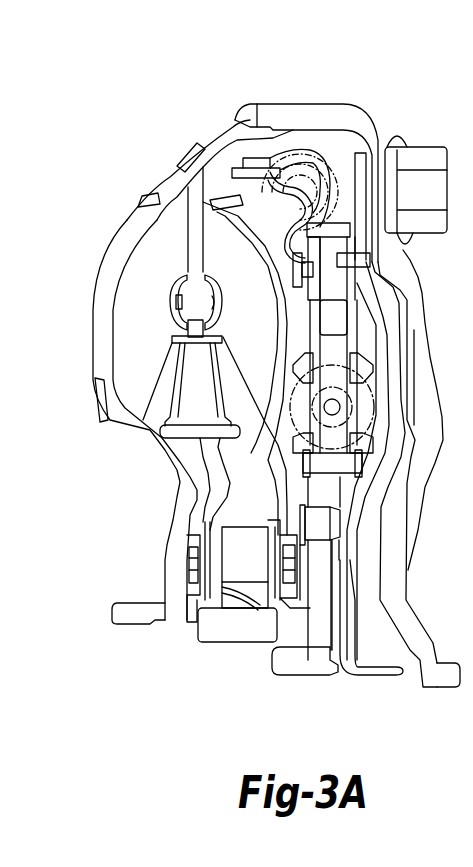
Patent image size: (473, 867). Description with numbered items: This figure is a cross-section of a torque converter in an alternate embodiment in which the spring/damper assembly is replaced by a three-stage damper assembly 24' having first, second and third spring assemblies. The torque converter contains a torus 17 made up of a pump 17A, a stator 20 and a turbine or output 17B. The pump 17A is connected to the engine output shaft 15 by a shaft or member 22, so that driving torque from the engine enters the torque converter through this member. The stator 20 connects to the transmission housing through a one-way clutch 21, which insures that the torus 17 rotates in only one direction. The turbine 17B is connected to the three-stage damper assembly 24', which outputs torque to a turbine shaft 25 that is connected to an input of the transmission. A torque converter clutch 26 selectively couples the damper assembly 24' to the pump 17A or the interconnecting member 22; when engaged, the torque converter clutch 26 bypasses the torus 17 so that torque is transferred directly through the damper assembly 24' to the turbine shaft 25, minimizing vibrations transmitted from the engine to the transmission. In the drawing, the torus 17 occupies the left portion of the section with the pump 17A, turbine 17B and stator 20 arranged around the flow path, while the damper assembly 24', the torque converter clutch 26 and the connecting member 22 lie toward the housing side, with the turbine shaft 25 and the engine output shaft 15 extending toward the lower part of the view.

The engine output shaft 15 is at (449, 678).
The torus 17 is at (155, 177).
The pump 17A is at (118, 233).
The turbine 17B is at (277, 410).
The stator 20 is at (205, 450).
The one-way clutch 21 is at (247, 563).
The shaft or member 22 is at (357, 116).
The three-stage damper assembly 24' is at (338, 347).
The turbine shaft 25 is at (302, 657).
The torque converter clutch 26 is at (300, 170).